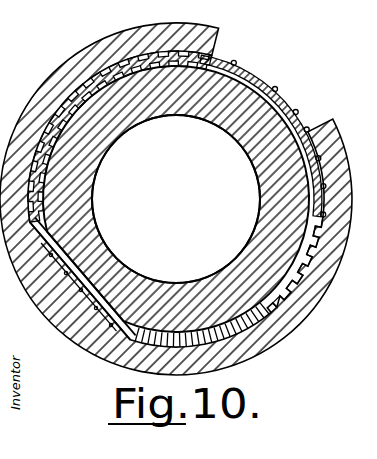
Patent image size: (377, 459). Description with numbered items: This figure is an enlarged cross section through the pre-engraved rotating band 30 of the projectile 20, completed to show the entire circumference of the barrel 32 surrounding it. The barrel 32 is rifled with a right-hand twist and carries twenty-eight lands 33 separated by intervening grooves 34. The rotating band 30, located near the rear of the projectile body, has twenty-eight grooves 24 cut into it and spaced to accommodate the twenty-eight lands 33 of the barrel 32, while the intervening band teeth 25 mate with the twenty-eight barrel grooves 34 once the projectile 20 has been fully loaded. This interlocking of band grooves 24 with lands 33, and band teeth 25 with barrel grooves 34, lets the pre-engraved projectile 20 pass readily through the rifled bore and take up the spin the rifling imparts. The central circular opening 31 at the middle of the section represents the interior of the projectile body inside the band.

The projectile 20 is at (176, 199).
The grooves 24 is at (254, 88).
The band teeth 25 is at (273, 79).
The rotating band 30 is at (178, 64).
The central bore 31 is at (176, 199).
The barrel 32 is at (314, 313).
The lands 33 is at (314, 219).
The grooves 34 is at (308, 237).